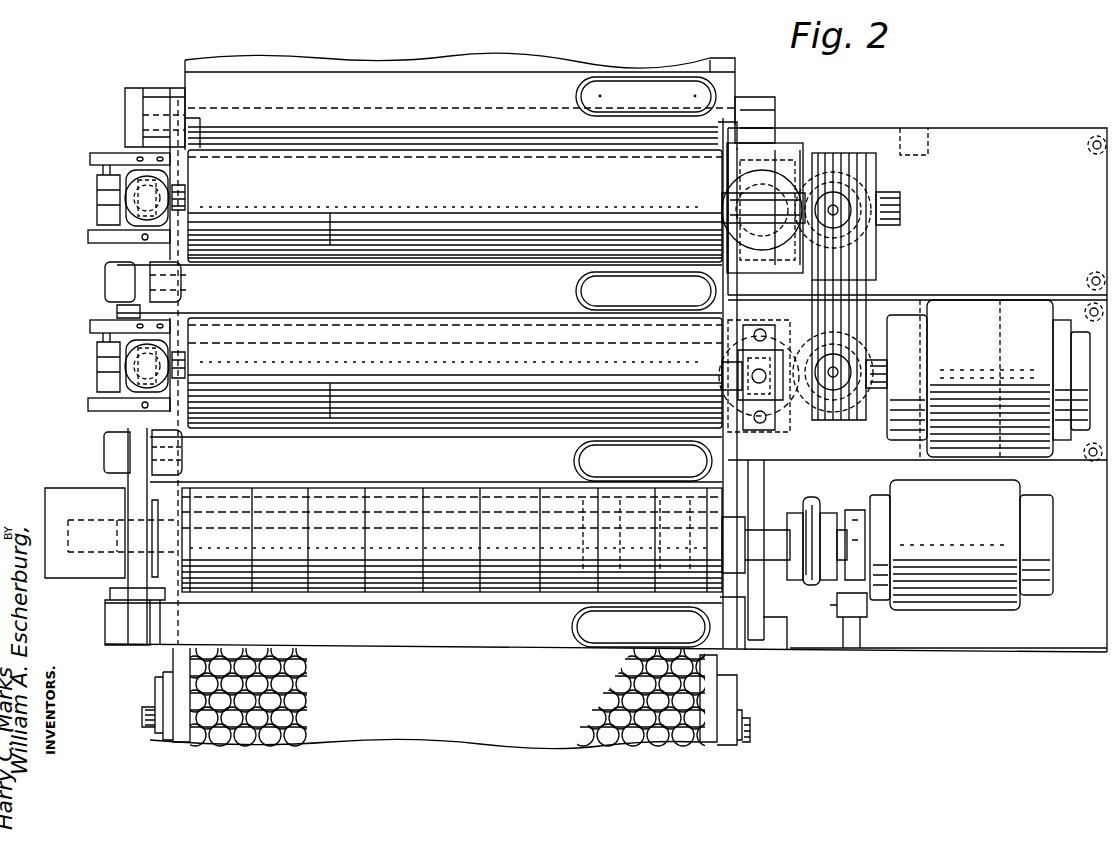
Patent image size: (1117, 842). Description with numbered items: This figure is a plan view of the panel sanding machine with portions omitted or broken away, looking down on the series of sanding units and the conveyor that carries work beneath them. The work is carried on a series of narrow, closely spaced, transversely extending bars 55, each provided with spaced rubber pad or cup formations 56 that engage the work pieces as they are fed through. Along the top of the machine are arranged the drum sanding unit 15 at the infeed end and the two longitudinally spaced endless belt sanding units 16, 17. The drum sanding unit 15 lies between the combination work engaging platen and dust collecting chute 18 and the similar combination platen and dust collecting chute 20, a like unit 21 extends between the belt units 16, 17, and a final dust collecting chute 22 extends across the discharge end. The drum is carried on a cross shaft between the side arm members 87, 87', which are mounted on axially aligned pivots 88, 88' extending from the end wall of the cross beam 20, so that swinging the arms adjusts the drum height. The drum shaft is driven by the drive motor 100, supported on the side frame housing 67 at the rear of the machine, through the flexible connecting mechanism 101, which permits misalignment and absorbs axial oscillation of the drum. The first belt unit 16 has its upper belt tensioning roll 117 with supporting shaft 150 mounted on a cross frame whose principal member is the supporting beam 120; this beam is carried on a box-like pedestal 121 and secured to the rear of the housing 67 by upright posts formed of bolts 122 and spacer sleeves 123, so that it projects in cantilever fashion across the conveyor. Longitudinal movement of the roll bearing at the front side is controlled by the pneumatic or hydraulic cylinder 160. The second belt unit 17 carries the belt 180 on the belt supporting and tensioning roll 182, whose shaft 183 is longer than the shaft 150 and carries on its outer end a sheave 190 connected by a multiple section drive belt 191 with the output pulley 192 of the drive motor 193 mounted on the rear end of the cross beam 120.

The drum sanding unit 15 is at (414, 602).
The first belt sanding unit 16 is at (451, 437).
The second belt sanding unit 17 is at (476, 268).
The combination work engaging platen and dust collecting chute 18 is at (590, 650).
The combination platen and dust collecting chute 20 is at (640, 484).
The platen forming cross beam and dust collector unit 21 is at (636, 312).
The final dust collecting chute 22 is at (645, 78).
The transversely extending bars 55 is at (278, 722).
The pad or cup formations 56 is at (282, 703).
The side frame housing 67 is at (996, 650).
The side arm member 87 is at (108, 536).
The side arm member 87' is at (762, 555).
The pivot 88 is at (182, 452).
The pivot 88' is at (648, 461).
The drive motor 100 is at (954, 604).
The flexible connecting mechanism 101 is at (812, 513).
The upper belt tensioning roll 117 is at (520, 371).
The supporting beam 120 is at (868, 460).
The pedestal 121 is at (910, 130).
The bolts 122 is at (1088, 148).
The spacer sleeves 123 is at (1097, 136).
The supporting shaft 150 is at (735, 374).
The pneumatic or hydraulic cylinder 160 is at (100, 200).
The belt 180 is at (973, 137).
The belt supporting and tensioning roll 182 is at (536, 194).
The shaft 183 is at (748, 195).
The sheave 190 is at (861, 160).
The multiple section drive belt 191 is at (852, 276).
The output pulley 192 is at (856, 420).
The drive motor 193 is at (1012, 354).